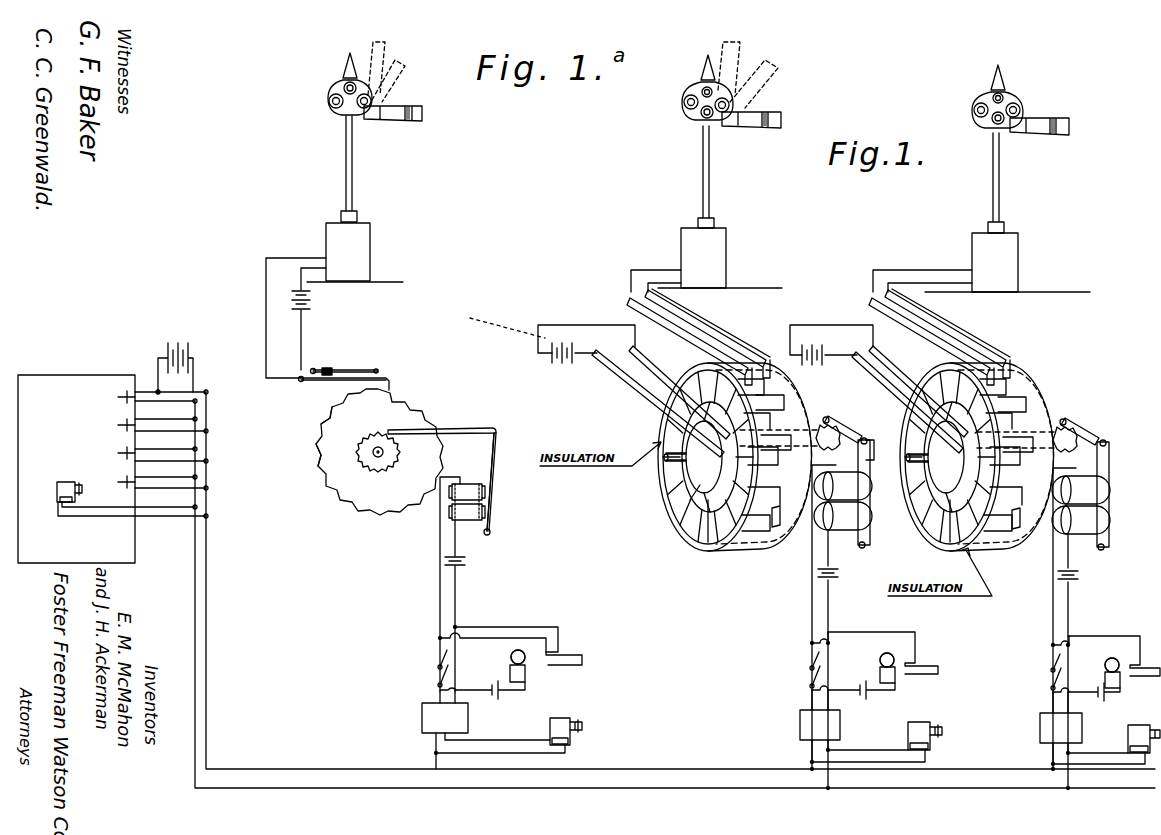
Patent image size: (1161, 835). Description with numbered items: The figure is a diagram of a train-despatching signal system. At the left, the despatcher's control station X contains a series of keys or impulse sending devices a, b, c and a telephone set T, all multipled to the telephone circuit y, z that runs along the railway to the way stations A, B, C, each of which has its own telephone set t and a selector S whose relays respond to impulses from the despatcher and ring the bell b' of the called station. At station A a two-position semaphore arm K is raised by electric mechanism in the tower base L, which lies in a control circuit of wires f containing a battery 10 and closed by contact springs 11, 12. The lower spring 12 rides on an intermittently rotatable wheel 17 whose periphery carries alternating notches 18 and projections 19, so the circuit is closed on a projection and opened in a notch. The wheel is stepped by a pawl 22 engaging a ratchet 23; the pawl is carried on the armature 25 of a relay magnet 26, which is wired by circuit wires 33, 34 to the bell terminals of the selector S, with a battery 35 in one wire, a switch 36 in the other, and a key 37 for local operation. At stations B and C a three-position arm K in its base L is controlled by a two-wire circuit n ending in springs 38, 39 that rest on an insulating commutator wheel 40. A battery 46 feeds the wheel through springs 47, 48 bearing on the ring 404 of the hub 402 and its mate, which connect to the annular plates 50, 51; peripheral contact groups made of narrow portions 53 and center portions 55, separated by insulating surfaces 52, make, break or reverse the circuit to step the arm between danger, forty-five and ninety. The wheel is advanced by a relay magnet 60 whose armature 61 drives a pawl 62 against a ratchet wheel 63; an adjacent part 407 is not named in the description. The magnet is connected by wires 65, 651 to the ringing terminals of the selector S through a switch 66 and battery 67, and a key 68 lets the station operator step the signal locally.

In FIG. 1A, the semaphore signal arm K is at (393, 105).
In FIG. 1, the semaphore signal arm K is at (777, 112).
In FIG. 1A, the base of the semaphore tower L is at (362, 262).
In FIG. 1, the base of the semaphore tower L is at (720, 268).
In FIG. 1A, the battery 10 is at (312, 300).
In FIG. 1A, the wires f is at (268, 336).
In FIG. 1A, the contact spring 11 is at (345, 368).
In FIG. 1A, the contact spring 12 is at (330, 381).
In FIG. 1A, the intermittently rotatable wheel 17 is at (346, 480).
In FIG. 1A, the notches 18 is at (318, 427).
In FIG. 1A, the projections 19 is at (318, 452).
In FIG. 1A, the pawl 22 is at (448, 428).
In FIG. 1A, the ratchet 23 is at (378, 472).
In FIG. 1A, the armature 25 is at (494, 500).
In FIG. 1A, the relay magnet 26 is at (464, 500).
In FIG. 1A, the circuit wire 33 is at (438, 596).
In FIG. 1A, the circuit wire 34 is at (457, 600).
In FIG. 1A, the battery 35 is at (467, 561).
In FIG. 1A, the switch 36 is at (436, 684).
In FIG. 1A, the key 37 is at (566, 653).
In FIG. 1A, the way station A is at (500, 674).
In FIG. 1A, the bell b' is at (508, 661).
In FIG. 1, the bell b' is at (989, 665).
In FIG. 1A, the selector S is at (420, 720).
In FIG. 1, the selector S is at (798, 724).
In FIG. 1A, the telephone set t is at (560, 720).
In FIG. 1, the telephone set t is at (920, 722).
In FIG. 1, the train despatcher's control station X is at (76, 469).
In FIG. 1, the impulse sending device a is at (156, 398).
In FIG. 1, the impulse sending device b is at (156, 426).
In FIG. 1, the impulse sending device c is at (156, 454).
In FIG. 1, the telephone set T is at (122, 500).
In FIG. 1, the telephone circuit wire y is at (262, 776).
In FIG. 1, the telephone circuit wire z is at (345, 755).
In FIG. 1, the wires n is at (660, 277).
In FIG. 1, the spring 38 is at (690, 332).
In FIG. 1, the spring 39 is at (706, 328).
In FIG. 1, the battery 46 is at (567, 362).
In FIG. 1, the spring 47 is at (672, 376).
In FIG. 1, the spring 48 is at (652, 395).
In FIG. 1, the intermittently rotatable wheel 40 is at (695, 520).
In FIG. 1, the hub 402 is at (682, 470).
In FIG. 1, the brass ring 404 is at (704, 505).
In FIG. 1, the armature support 407 is at (920, 452).
In FIG. 1, the annular plate 50 is at (786, 520).
In FIG. 1, the annular plate 51 is at (720, 512).
In FIG. 1, the insulating surfaces 52 is at (782, 397).
In FIG. 1, the narrow portion of contact 53 is at (786, 412).
In FIG. 1, the center contact portion 55 is at (828, 424).
In FIG. 1, the relay magnet 60 is at (862, 518).
In FIG. 1, the armature 61 is at (862, 490).
In FIG. 1, the pawl 62 is at (870, 430).
In FIG. 1, the ratchet wheel 63 is at (846, 430).
In FIG. 1, the circuit wire 65 is at (810, 608).
In FIG. 1, the circuit wire 651 is at (830, 618).
In FIG. 1, the switch 66 is at (808, 686).
In FIG. 1, the battery 67 is at (840, 574).
In FIG. 1, the key 68 is at (920, 660).
In FIG. 1, the way station B is at (872, 676).
In FIG. 1, the way station C is at (1105, 680).